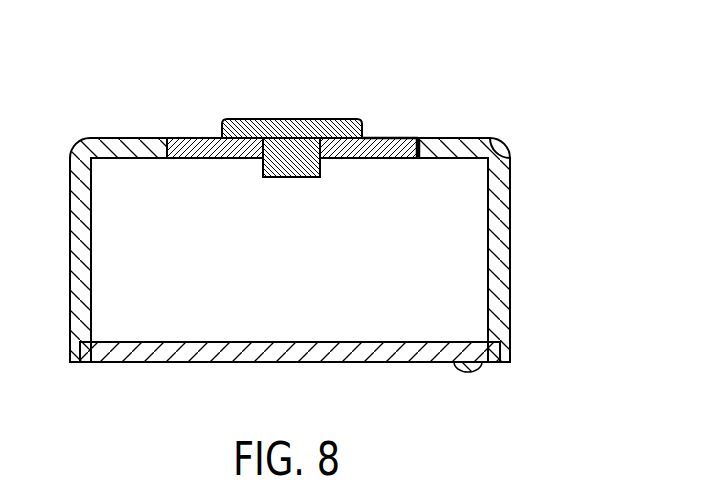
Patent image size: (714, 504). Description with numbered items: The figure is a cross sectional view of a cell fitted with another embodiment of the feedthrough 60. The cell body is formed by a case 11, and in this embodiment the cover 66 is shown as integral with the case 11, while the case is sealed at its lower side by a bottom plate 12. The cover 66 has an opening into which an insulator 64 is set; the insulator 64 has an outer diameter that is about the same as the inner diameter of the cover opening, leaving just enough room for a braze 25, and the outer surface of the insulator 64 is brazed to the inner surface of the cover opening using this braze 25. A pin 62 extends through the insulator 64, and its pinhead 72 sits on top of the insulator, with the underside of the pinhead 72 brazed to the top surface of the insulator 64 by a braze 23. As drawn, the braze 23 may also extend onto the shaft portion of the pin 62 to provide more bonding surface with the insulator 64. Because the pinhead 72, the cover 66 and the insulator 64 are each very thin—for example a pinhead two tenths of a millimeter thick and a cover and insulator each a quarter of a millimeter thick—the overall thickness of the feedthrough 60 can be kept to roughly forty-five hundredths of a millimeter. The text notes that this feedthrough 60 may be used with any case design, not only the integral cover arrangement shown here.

The feedthrough 60 is at (150, 94).
The case 11 is at (510, 218).
The cover 66 is at (508, 148).
The bottom plate 12 is at (465, 372).
The insulator 64 is at (395, 137).
The braze 25 is at (418, 140).
The pinhead 72 is at (287, 119).
The pin 62 is at (303, 178).
The braze 23 is at (373, 138).